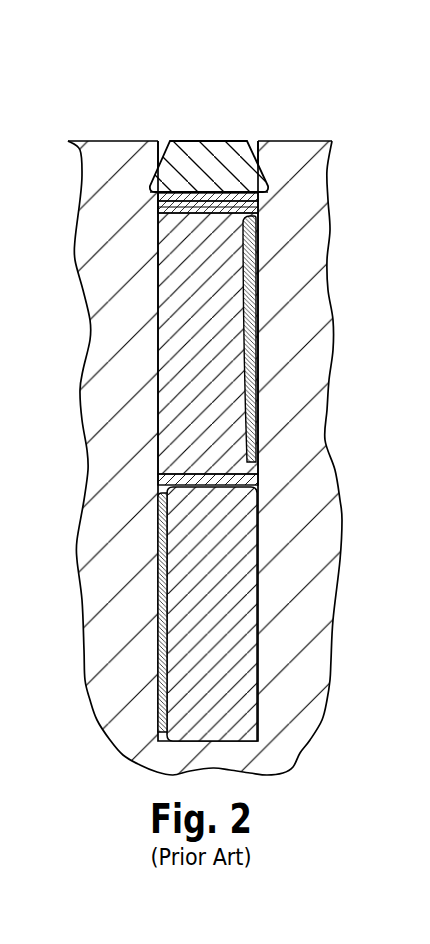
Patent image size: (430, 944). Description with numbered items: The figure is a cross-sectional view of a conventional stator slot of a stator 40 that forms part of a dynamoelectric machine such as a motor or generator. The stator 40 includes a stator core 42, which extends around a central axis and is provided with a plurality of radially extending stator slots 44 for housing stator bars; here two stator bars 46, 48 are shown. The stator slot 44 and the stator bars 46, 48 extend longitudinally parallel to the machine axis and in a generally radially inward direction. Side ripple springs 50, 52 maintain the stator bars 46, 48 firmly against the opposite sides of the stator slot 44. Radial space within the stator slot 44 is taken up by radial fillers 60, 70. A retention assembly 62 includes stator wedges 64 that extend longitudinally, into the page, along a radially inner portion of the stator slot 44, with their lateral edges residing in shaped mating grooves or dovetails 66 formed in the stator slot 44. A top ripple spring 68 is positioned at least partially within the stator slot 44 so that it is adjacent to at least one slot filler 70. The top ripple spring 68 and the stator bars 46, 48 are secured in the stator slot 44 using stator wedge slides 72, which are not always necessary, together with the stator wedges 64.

The stator 40 is at (62, 100).
The stator core 42 is at (105, 341).
The stator slot 44 is at (240, 127).
The stator bar 46 is at (177, 649).
The stator bar 48 is at (163, 446).
The side ripple spring 50 is at (160, 582).
The side ripple spring 52 is at (258, 367).
The radial filler 60 is at (162, 478).
The retention assembly 62 is at (128, 193).
The stator wedge 64 is at (163, 142).
The dovetail 66 is at (276, 158).
The top ripple spring 68 is at (158, 201).
The radial filler 70 is at (258, 209).
The stator wedge slide 72 is at (258, 196).